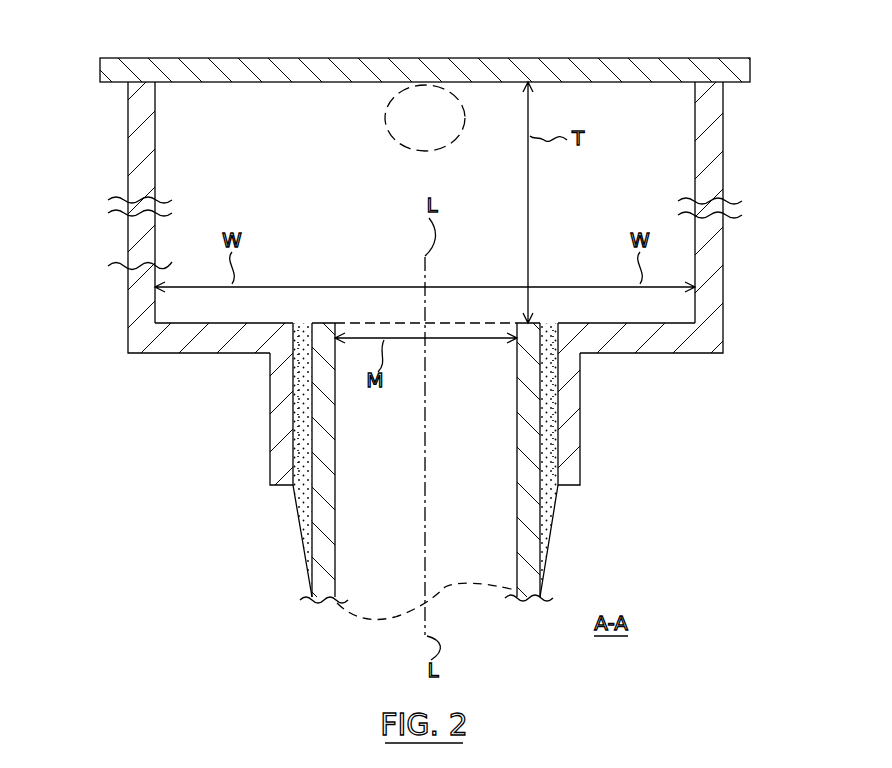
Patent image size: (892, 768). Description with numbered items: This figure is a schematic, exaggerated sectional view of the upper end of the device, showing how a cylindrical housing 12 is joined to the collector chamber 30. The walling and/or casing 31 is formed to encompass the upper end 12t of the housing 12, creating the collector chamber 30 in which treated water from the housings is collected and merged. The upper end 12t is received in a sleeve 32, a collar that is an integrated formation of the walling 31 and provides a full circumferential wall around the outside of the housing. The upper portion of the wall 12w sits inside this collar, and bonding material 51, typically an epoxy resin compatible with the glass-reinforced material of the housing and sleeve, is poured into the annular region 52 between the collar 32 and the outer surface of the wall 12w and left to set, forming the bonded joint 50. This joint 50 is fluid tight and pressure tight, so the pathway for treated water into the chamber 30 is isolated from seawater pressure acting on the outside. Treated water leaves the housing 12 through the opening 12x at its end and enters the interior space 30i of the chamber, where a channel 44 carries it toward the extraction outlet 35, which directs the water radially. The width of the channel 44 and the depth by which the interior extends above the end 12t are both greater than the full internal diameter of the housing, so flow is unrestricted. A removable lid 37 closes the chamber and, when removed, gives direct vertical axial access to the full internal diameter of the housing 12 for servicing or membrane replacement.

The housing 12 is at (423, 429).
The wall 12w is at (335, 440).
The upper end 12t is at (320, 322).
The opening 12x is at (398, 320).
The collector chamber 30 is at (160, 243).
The interior space 30i is at (311, 170).
The walling and/or casing 31 is at (174, 354).
The sleeve 32 is at (278, 424).
The extraction outlet 35 is at (462, 108).
The removable lid 37 is at (237, 76).
The channel 44 is at (124, 265).
The bonded joint 50 is at (412, 411).
The bonding material 51 is at (300, 385).
The annular region 52 is at (296, 464).